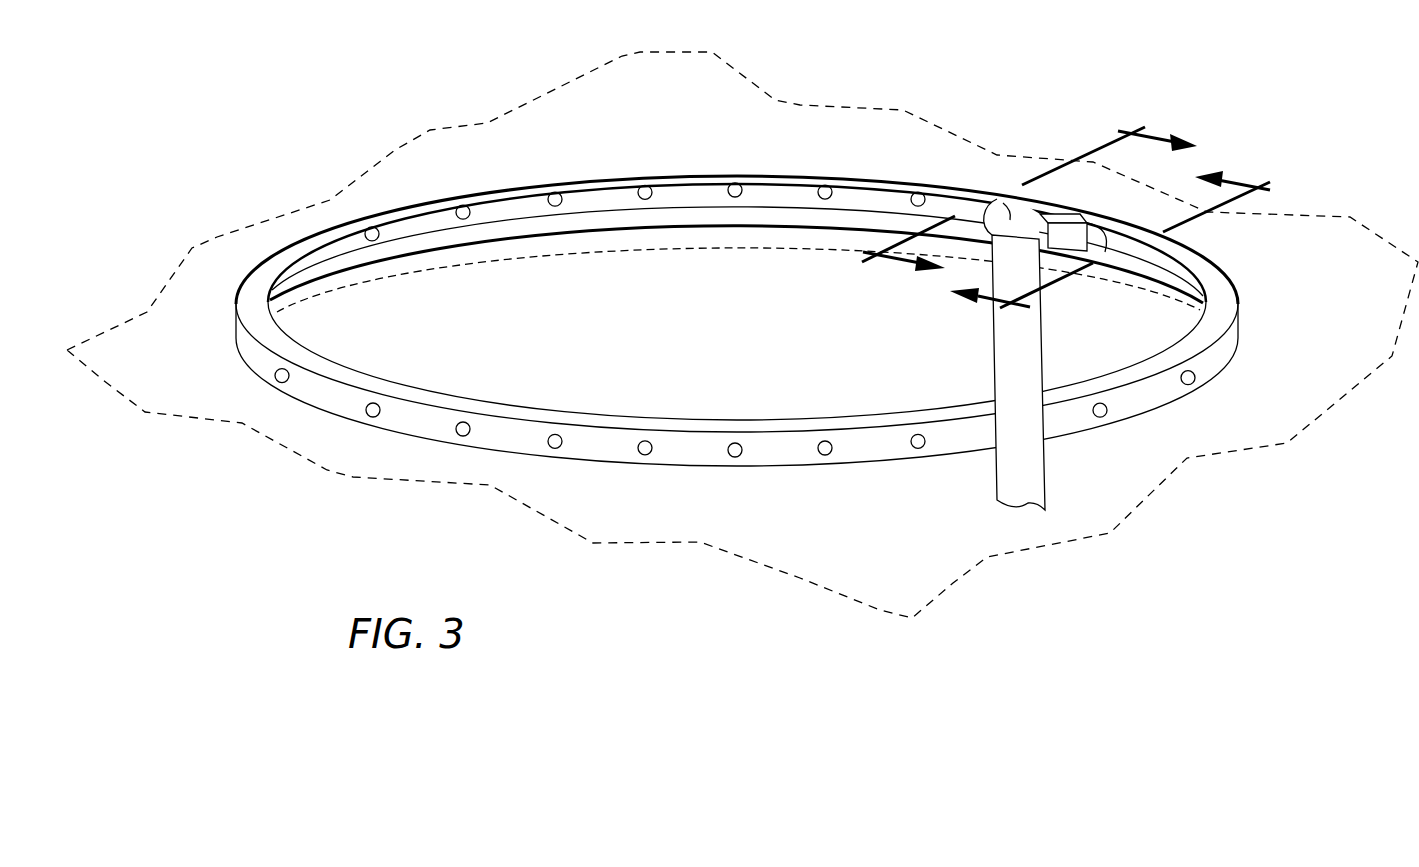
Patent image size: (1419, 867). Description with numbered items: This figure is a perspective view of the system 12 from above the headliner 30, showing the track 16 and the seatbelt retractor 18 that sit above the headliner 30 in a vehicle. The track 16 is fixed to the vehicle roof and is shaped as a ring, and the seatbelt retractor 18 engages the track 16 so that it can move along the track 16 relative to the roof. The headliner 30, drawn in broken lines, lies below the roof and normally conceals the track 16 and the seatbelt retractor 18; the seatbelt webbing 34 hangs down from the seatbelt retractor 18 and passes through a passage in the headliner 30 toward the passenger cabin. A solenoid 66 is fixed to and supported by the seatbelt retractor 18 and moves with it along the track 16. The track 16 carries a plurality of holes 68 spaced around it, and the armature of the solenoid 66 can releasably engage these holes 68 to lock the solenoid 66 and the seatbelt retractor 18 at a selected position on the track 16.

The system 12 is at (831, 140).
The track 16 is at (562, 183).
The seatbelt retractor 18 is at (1010, 216).
The headliner 30 is at (956, 585).
The seatbelt webbing 34 is at (998, 483).
The solenoid 66 is at (1098, 235).
The holes 68 is at (826, 458).